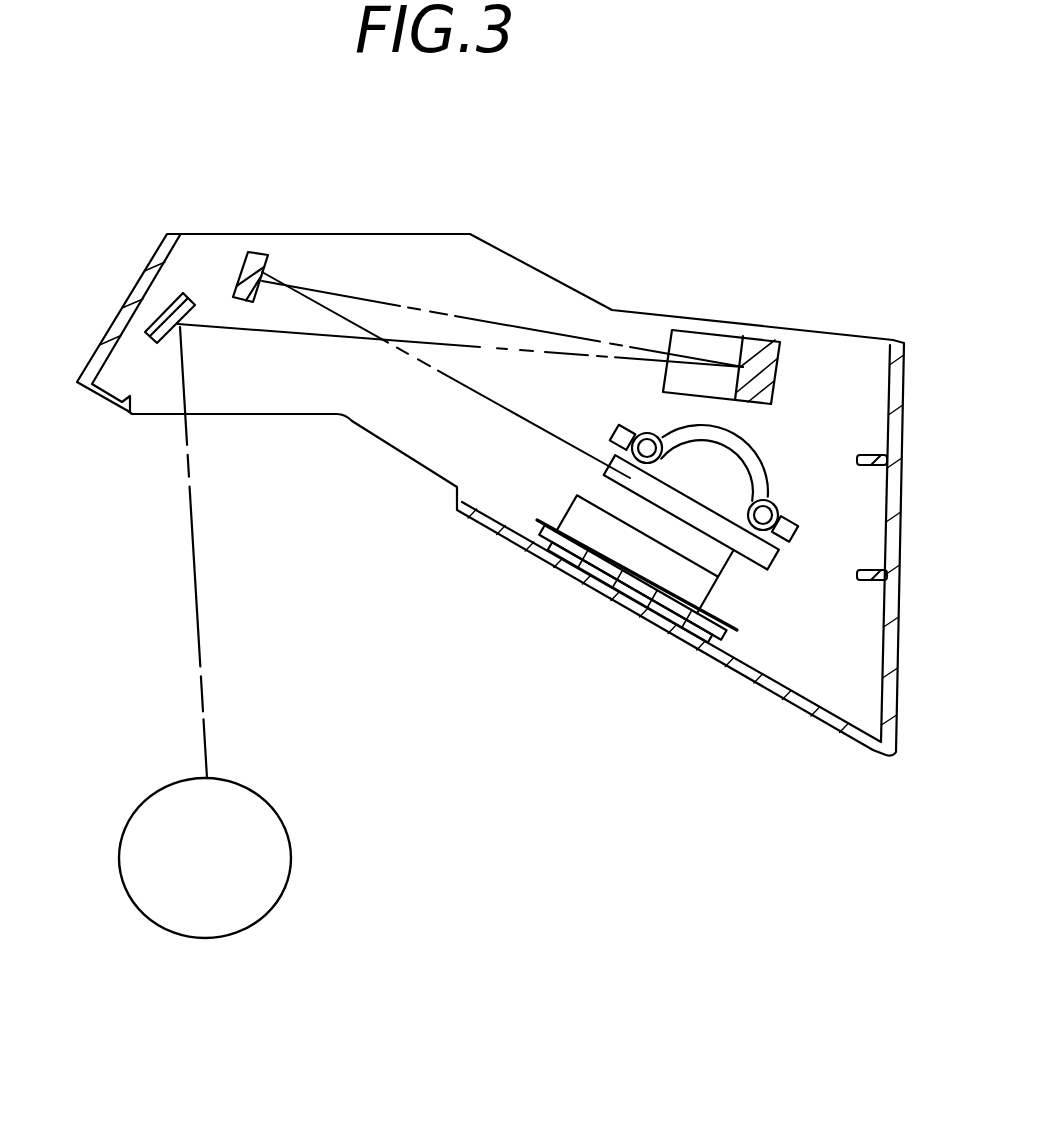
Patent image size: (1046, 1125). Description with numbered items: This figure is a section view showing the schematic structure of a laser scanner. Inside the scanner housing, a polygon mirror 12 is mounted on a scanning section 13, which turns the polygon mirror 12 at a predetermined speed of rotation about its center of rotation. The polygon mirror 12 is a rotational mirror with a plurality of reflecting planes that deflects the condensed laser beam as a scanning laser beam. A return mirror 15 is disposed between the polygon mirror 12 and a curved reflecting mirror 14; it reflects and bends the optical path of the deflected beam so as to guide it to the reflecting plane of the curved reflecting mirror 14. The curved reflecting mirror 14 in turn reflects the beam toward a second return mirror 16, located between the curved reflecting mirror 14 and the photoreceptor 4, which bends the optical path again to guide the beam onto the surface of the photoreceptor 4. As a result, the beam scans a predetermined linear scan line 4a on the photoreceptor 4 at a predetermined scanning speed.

The photoreceptor 4 is at (176, 920).
The scan line 4a is at (208, 778).
The polygon mirror 12 is at (765, 553).
The scanning section 13 is at (645, 512).
The curved reflecting mirror 14 is at (766, 338).
The return mirror 15 is at (266, 250).
The return mirror 16 is at (160, 313).